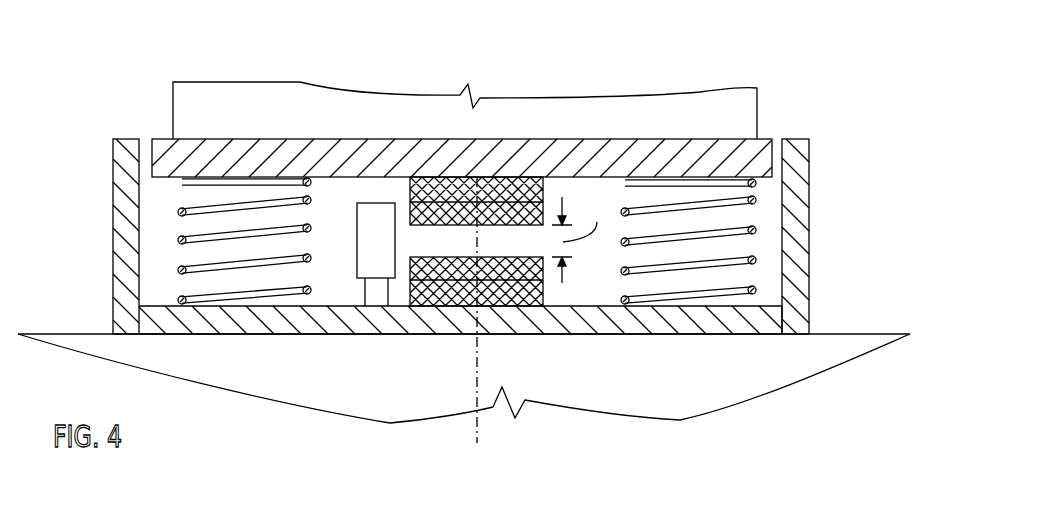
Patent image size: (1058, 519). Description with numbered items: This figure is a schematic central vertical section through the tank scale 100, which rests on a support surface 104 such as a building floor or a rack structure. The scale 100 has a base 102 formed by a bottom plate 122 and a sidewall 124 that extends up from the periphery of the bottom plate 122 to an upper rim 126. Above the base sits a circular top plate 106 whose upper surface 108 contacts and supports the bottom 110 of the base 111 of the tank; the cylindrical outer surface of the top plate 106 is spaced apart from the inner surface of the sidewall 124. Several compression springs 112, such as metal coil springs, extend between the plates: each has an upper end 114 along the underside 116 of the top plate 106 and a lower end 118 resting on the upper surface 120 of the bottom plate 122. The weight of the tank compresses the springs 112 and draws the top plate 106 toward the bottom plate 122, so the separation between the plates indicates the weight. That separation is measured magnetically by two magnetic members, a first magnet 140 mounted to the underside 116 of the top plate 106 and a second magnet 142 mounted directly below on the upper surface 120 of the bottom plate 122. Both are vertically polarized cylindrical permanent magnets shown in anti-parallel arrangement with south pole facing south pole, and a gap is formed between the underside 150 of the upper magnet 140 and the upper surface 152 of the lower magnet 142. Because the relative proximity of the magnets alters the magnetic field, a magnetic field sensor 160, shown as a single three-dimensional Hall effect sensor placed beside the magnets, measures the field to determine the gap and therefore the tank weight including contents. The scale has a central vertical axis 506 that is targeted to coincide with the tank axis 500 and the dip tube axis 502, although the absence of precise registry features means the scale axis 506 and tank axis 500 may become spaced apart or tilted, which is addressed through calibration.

The scale 100 is at (904, 84).
The base 102 is at (487, 293).
The support surface 104 is at (850, 333).
The top plate 106 is at (418, 96).
The upper surface 108 is at (760, 137).
The bottom 110 is at (390, 147).
The base of the tank 111 is at (506, 78).
The springs 112 is at (465, 324).
The upper end 114 is at (702, 170).
The underside 116 is at (600, 184).
The lower end 118 is at (628, 300).
The upper surface 120 is at (605, 305).
The bottom plate 122 is at (212, 323).
The sidewall 124 is at (127, 238).
The upper rim 126 is at (125, 137).
The first magnet 140 is at (492, 175).
The second magnet 142 is at (443, 305).
The underside 150 is at (448, 225).
The upper surface 152 is at (505, 245).
The magnetic field sensor 160 is at (371, 260).
The tank axis 500 is at (549, 338).
The dip tube axis 502 is at (549, 338).
The central vertical axis 506 is at (477, 427).